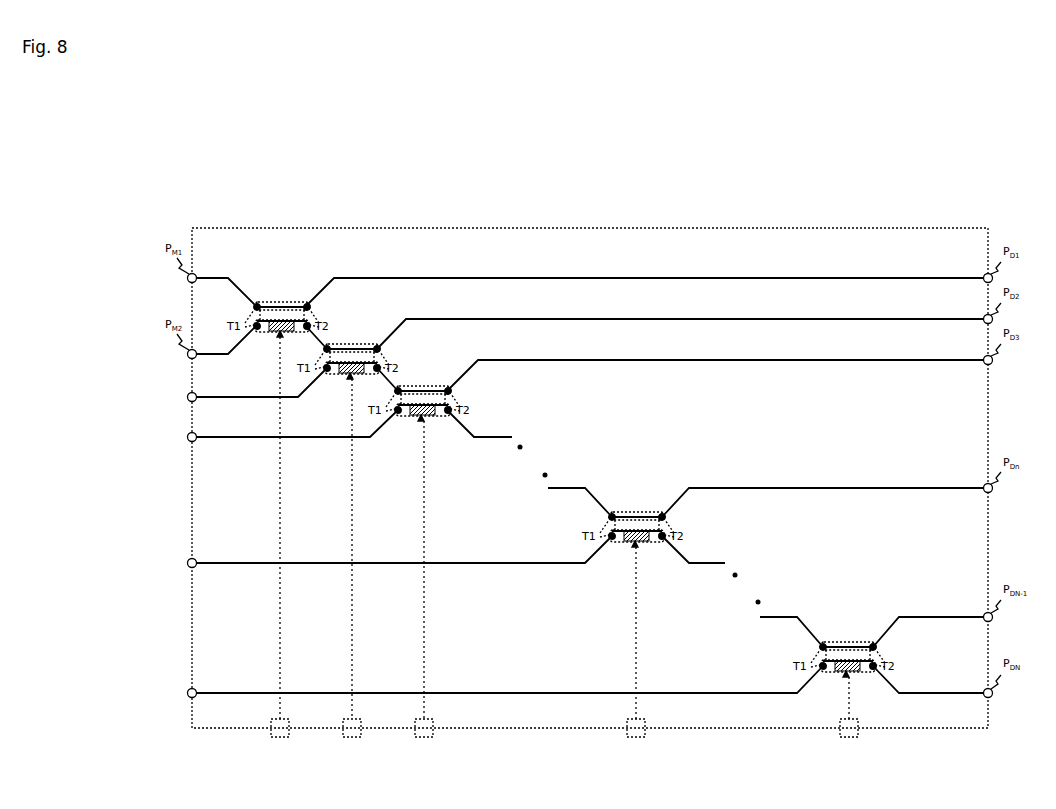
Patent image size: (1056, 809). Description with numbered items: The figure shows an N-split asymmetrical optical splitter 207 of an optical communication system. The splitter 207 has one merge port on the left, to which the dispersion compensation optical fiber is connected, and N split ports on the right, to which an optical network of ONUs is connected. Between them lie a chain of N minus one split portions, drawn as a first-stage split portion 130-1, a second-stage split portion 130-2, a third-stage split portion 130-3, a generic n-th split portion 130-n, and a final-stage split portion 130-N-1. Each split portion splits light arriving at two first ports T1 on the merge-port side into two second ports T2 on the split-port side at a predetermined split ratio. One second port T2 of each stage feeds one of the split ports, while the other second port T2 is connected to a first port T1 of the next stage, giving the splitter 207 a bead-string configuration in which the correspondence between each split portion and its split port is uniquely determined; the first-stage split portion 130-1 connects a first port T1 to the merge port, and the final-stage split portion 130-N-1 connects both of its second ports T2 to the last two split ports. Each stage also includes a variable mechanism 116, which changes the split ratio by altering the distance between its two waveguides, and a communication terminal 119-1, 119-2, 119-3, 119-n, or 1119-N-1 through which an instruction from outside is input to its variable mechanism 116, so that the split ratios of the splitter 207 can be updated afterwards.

The asymmetrical optical splitter 207 is at (495, 228).
The split portion of the first stage 130-1 is at (282, 301).
The split portion of the second stage 130-2 is at (367, 344).
The split portion of the third stage 130-3 is at (443, 386).
The n-th split portion 130-n is at (647, 512).
The split portion of the final stage 130-N-1 is at (867, 642).
The variable mechanism 116 is at (268, 334).
The communication terminal 119-1 is at (272, 737).
The communication terminal 119-2 is at (345, 737).
The communication terminal 119-3 is at (418, 737).
The communication terminal 119-n is at (630, 737).
The communication terminal 1119-N-1 is at (841, 738).
The first port T1 is at (523, 491).
The second port T2 is at (602, 491).